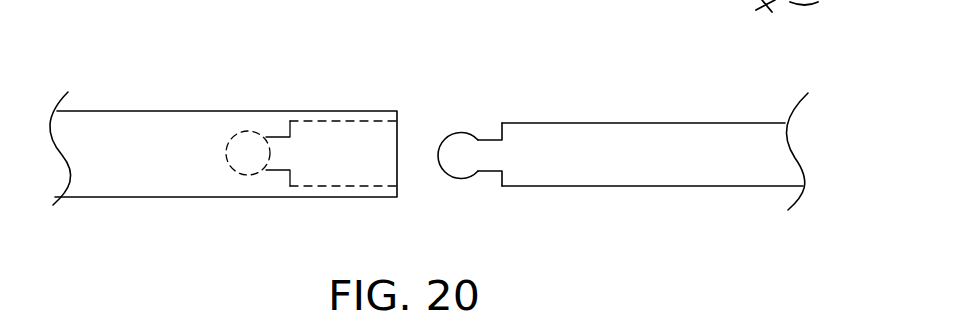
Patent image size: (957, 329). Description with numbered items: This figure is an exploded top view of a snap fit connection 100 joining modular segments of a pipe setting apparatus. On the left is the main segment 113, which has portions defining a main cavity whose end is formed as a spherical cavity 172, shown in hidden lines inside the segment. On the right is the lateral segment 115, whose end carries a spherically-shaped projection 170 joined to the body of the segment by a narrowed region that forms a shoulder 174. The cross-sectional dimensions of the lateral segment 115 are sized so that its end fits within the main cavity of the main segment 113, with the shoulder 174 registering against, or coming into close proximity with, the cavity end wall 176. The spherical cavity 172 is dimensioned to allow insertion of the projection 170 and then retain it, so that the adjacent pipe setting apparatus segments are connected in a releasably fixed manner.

The rod connector assembly 100 is at (452, 57).
The main segment 113 is at (152, 111).
The lateral segment 115 is at (628, 123).
The spherically-shaped projection 170 is at (470, 130).
The spherical cavity 172 is at (247, 155).
The shoulder 174 is at (502, 180).
The cavity end wall 176 is at (292, 128).